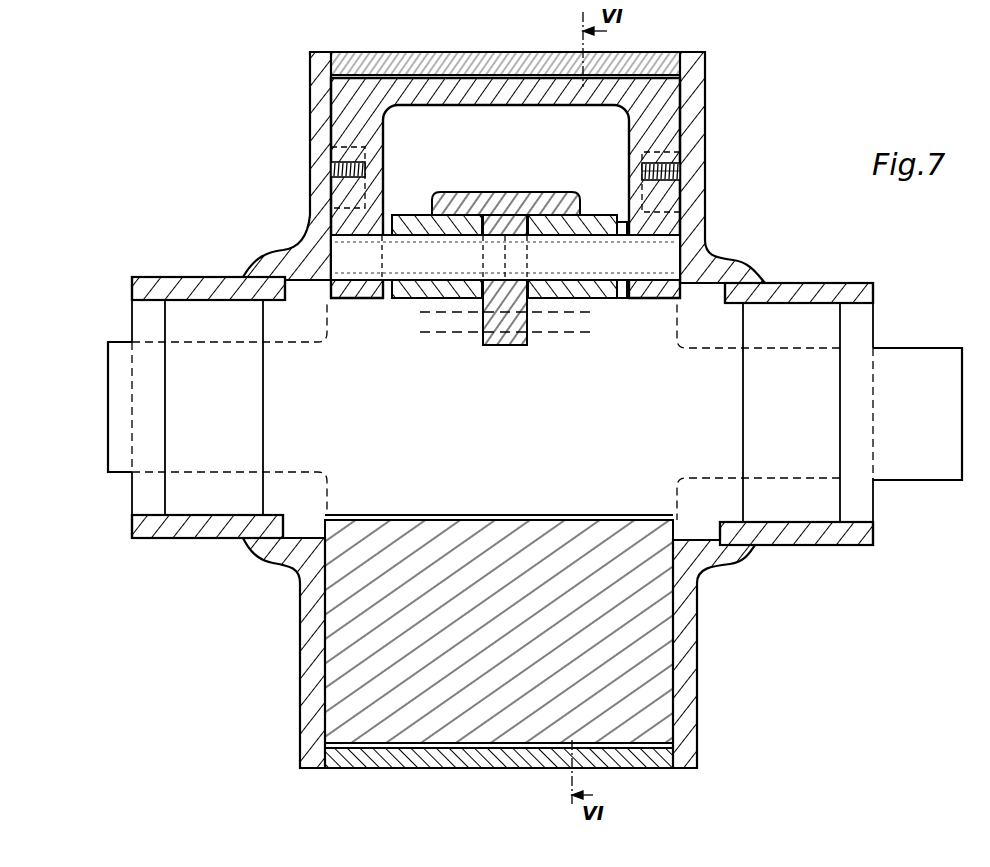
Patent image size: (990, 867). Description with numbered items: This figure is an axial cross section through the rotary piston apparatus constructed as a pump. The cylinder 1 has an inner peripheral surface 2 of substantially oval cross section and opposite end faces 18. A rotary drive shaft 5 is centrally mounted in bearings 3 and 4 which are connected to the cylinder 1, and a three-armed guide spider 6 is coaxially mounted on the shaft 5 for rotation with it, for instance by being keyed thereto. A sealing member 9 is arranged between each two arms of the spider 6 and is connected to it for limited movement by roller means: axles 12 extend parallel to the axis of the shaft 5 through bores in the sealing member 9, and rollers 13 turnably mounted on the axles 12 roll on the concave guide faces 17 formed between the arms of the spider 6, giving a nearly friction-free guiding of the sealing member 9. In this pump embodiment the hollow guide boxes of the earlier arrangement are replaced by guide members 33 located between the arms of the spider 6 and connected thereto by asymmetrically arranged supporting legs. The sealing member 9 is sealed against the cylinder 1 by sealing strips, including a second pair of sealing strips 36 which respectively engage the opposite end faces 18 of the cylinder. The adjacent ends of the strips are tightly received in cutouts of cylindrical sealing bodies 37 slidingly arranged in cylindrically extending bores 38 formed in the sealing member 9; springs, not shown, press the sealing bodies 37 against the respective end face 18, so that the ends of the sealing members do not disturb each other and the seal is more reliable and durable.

The cylinder 1 is at (705, 121).
The inner peripheral surface 2 is at (365, 77).
The bearing 3 is at (203, 283).
The bearing 4 is at (820, 296).
The rotary drive shaft 5 is at (908, 360).
The three-armed guide spider 6 is at (655, 600).
The sealing member 9 is at (665, 139).
The axle 12 is at (667, 259).
The roller 13 is at (408, 225).
The concave guide face 17 is at (428, 298).
The end face of the cylinder 18 is at (680, 130).
The guide member 33 is at (530, 193).
The sealing strip 36 is at (333, 171).
The cylindrical sealing body 37 is at (690, 172).
The cylindrically extending bore 38 is at (682, 156).